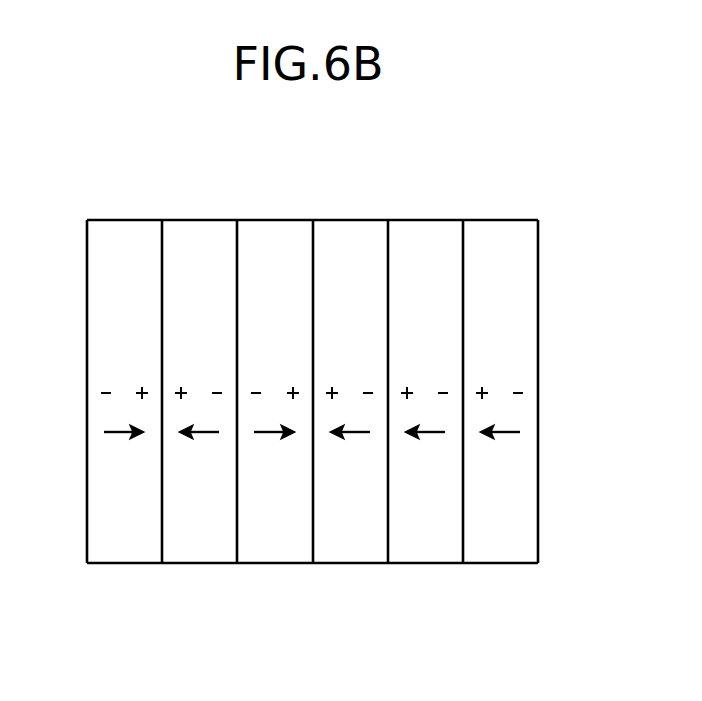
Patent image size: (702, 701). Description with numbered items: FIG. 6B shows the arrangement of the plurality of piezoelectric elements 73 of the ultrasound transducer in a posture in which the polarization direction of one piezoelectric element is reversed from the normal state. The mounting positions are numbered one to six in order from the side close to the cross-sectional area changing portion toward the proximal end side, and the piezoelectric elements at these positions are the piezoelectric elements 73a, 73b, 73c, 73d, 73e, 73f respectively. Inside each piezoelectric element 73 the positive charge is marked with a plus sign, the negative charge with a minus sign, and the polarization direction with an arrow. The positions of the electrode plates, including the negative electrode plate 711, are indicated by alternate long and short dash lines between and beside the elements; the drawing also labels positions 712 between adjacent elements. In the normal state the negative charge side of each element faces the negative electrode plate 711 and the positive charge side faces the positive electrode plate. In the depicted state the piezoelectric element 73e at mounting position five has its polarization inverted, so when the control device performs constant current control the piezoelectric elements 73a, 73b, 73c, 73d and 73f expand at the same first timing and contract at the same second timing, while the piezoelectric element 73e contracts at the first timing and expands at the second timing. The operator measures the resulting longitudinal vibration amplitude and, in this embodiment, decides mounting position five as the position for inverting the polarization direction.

The piezoelectric element 73 is at (325, 342).
The piezoelectric element 73a is at (140, 233).
The piezoelectric element 73b is at (216, 233).
The piezoelectric element 73c is at (291, 233).
The piezoelectric element 73d is at (366, 233).
The piezoelectric element 73e is at (442, 233).
The piezoelectric element 73f is at (518, 233).
The negative electrode plate 711 is at (87, 568).
The second electrode 712 is at (162, 568).